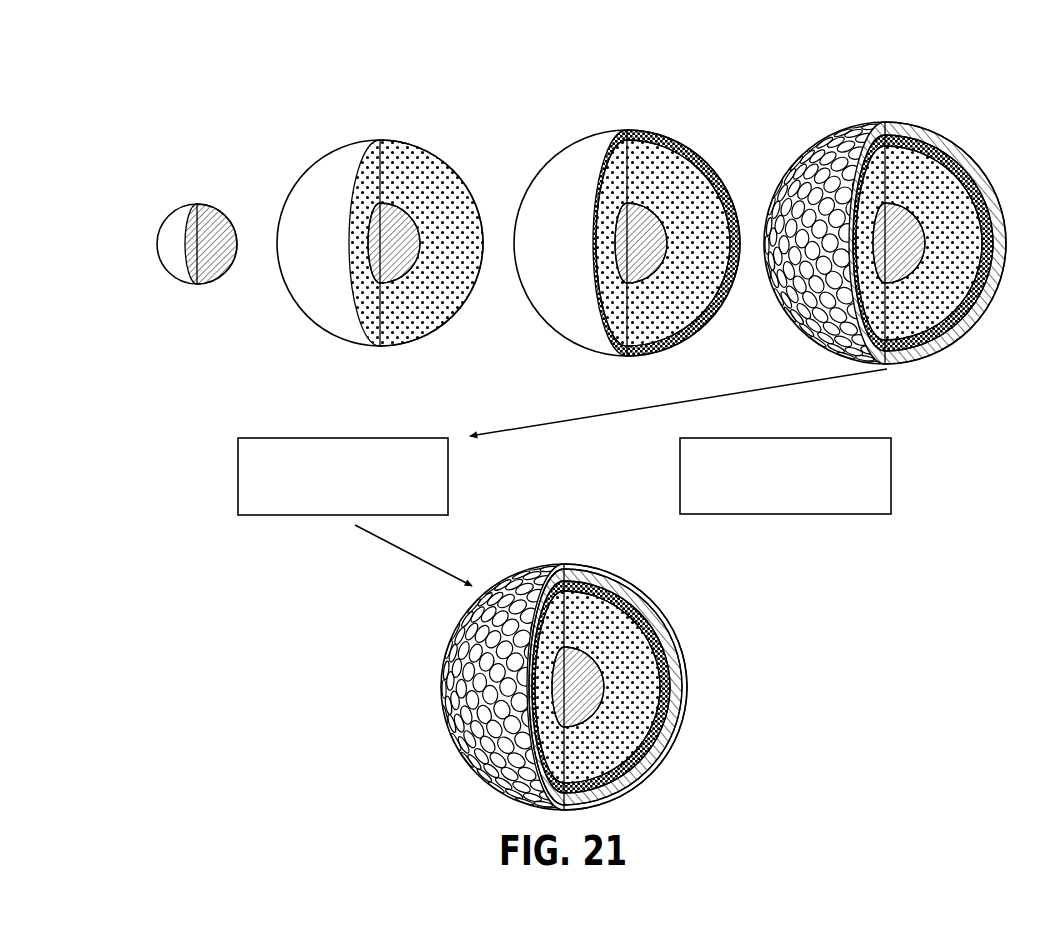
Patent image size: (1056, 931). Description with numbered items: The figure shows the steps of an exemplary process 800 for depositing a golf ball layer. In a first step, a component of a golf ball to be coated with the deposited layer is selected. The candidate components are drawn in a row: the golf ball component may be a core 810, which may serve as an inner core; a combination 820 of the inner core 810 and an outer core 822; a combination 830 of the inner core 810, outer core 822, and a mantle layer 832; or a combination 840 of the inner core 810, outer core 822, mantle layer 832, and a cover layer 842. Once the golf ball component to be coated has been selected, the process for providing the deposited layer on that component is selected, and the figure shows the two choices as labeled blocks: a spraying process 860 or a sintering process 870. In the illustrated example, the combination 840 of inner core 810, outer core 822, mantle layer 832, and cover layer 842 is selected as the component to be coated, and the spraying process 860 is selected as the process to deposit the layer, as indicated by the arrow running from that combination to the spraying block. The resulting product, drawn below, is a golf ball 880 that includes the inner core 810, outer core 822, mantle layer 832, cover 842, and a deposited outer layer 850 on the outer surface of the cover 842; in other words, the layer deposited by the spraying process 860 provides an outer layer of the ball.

The process 800 is at (212, 102).
The core 810 is at (186, 190).
The combination of inner core and outer core 820 is at (331, 127).
The outer core 822 is at (440, 177).
The combination of inner core, outer core, and mantle layer 830 is at (567, 130).
The mantle layer 832 is at (680, 143).
The combination of inner core, outer core, mantle layer, and cover layer 840 is at (830, 113).
The cover layer 842 is at (950, 132).
The deposited outer layer 850 is at (653, 622).
The spraying process 860 is at (238, 488).
The sintering process 870 is at (891, 475).
The golf ball 880 is at (511, 556).